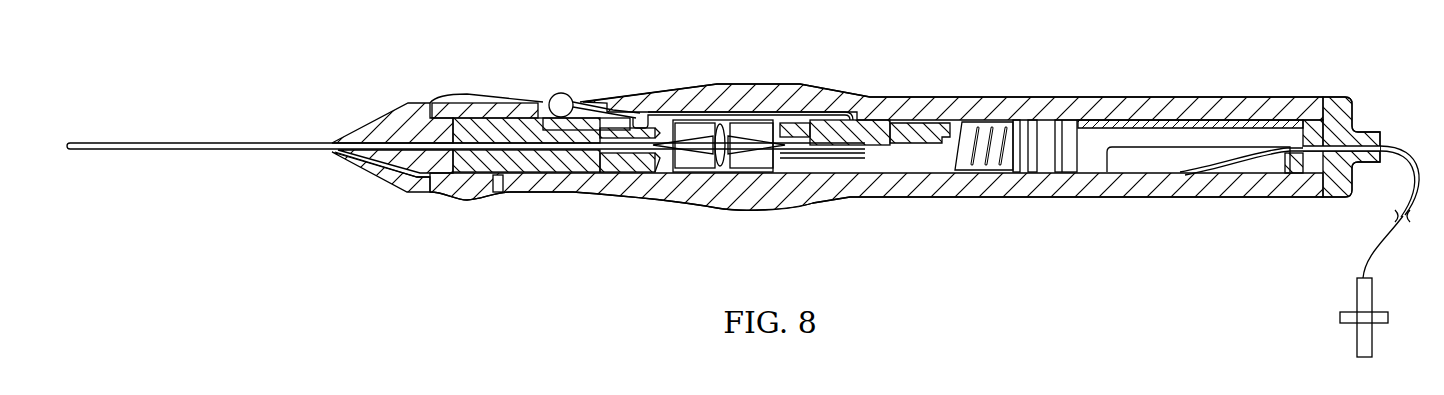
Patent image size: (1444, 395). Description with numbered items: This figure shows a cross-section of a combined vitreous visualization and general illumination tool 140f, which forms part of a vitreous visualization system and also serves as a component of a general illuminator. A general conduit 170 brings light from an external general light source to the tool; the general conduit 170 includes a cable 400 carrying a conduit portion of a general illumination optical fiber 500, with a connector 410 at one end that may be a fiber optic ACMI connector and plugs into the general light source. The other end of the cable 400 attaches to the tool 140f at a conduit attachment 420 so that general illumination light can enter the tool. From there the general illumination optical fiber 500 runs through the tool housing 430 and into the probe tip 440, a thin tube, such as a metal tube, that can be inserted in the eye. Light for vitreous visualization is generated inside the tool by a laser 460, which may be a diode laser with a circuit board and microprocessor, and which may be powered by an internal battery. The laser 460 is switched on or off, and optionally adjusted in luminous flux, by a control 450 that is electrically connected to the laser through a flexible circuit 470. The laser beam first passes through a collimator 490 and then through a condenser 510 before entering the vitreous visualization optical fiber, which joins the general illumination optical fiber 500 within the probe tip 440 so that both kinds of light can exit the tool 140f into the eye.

The combined vitreous visualization and general illumination tool 140f is at (1062, 54).
The probe tip 440 is at (225, 143).
The control 450 is at (561, 93).
The circuit 470 is at (740, 94).
The laser 460 is at (934, 107).
The collimator 490 is at (721, 172).
The general illumination optical fiber 500 is at (988, 172).
The condenser 510 is at (657, 174).
The tool housing 430 is at (1230, 185).
The conduit attachment 420 is at (1333, 98).
The cable 400 is at (1400, 148).
The connector 410 is at (1340, 318).
The general conduit 170 is at (1299, 268).